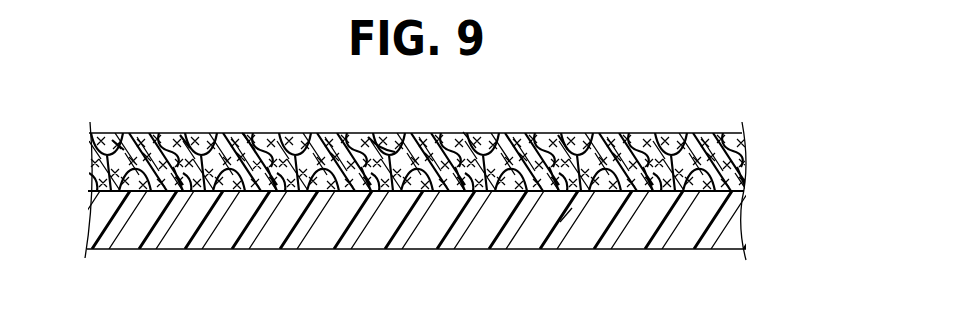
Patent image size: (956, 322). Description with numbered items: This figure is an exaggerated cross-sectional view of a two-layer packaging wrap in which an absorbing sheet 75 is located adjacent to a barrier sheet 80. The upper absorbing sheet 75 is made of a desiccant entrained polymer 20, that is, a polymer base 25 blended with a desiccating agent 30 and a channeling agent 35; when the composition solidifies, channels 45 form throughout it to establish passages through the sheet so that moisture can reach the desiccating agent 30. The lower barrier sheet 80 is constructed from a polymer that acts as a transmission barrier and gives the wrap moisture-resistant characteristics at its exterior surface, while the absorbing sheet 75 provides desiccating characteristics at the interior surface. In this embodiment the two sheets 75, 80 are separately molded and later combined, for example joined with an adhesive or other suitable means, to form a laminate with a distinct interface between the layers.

The desiccant entrained polymer 20 is at (456, 184).
The polymer base 25 is at (115, 138).
The desiccating agent 30 is at (242, 134).
The channeling agent 35 is at (368, 137).
The channels 45 is at (180, 135).
The absorbing sheet 75 is at (770, 157).
The barrier sheet 80 is at (773, 233).